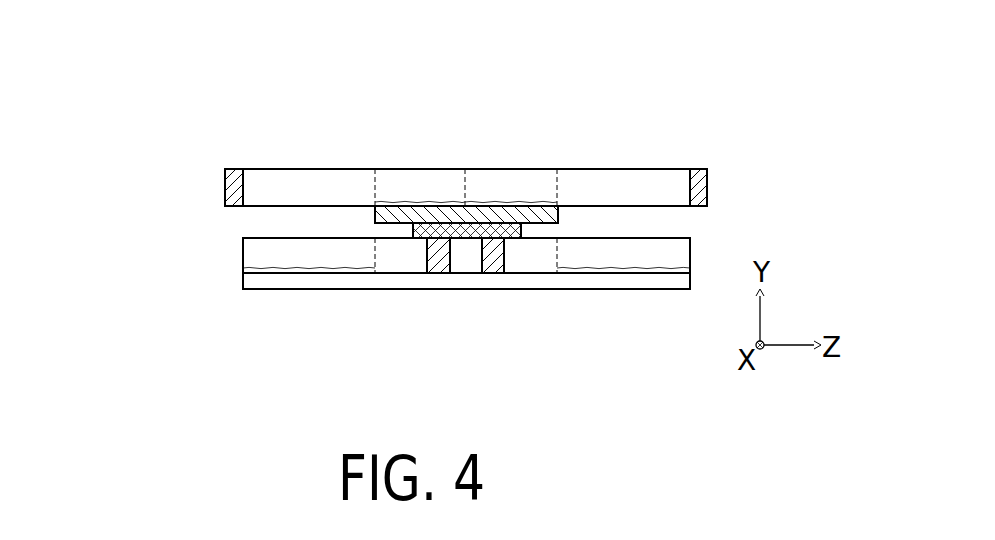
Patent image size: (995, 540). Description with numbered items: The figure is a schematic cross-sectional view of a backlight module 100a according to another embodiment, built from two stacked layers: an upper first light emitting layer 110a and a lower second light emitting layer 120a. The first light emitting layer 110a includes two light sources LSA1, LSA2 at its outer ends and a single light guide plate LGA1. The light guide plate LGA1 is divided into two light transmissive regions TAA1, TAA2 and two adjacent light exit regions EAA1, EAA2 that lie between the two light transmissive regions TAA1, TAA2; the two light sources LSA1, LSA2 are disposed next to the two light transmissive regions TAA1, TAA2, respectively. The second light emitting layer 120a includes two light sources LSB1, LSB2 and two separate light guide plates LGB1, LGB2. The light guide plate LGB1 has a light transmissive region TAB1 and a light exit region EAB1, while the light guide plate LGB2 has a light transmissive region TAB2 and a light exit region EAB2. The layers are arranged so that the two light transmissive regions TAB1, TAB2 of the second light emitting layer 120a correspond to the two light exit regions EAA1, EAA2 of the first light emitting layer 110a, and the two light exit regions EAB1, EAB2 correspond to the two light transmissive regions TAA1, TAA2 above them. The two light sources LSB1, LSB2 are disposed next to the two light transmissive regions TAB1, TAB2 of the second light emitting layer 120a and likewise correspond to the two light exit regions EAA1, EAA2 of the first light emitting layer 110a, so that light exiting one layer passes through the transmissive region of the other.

The backlight module 100a is at (122, 31).
The first light emitting layer 110a is at (178, 188).
The second light emitting layer 120a is at (178, 268).
The light source LSA1 is at (236, 168).
The light source LSA2 is at (695, 168).
The light guide plate LGA1 is at (620, 80).
The light transmissive region TAA1 is at (348, 188).
The light transmissive region TAA2 is at (603, 188).
The light exit region EAA1 is at (432, 188).
The light exit region EAA2 is at (512, 188).
The light guide plate LGB1 is at (425, 372).
The light guide plate LGB2 is at (658, 372).
The light transmissive region TAB1 is at (397, 266).
The light transmissive region TAB2 is at (545, 266).
The light exit region EAB1 is at (318, 257).
The light exit region EAB2 is at (623, 255).
The light source LSB1 is at (438, 266).
The light source LSB2 is at (492, 266).